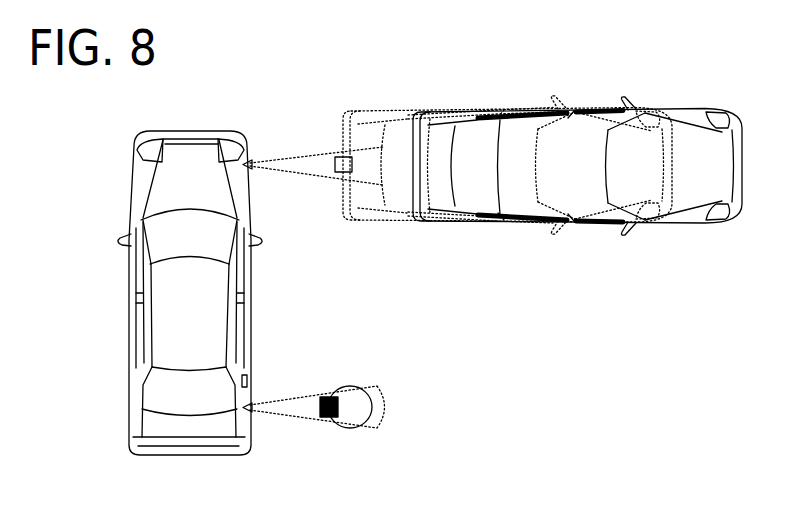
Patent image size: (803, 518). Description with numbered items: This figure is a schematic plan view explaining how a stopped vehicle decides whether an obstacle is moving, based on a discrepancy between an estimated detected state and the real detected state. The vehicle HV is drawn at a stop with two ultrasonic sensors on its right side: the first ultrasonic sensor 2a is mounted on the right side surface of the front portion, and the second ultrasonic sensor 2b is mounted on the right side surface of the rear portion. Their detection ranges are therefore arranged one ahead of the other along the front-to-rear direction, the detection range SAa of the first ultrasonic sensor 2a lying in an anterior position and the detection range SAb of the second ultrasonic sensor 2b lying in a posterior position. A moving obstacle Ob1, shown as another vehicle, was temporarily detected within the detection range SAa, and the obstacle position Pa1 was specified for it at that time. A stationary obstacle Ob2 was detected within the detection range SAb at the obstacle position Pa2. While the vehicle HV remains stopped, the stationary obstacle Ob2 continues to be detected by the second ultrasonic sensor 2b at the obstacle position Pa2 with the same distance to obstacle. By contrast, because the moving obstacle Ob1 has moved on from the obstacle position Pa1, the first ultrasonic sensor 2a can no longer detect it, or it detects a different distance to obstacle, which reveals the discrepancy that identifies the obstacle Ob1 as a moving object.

The vehicle HV is at (130, 320).
The first ultrasonic sensor 2a is at (246, 158).
The second ultrasonic sensor 2b is at (248, 412).
The detection range of the first ultrasonic sensor SAa is at (340, 156).
The detection range of the second ultrasonic sensor SAb is at (383, 410).
The obstacle position of the moving obstacle Pa1 is at (343, 173).
The obstacle position of the stationary obstacle Pa2 is at (333, 419).
The moving obstacle Ob1 is at (687, 108).
The stationary obstacle Ob2 is at (350, 386).